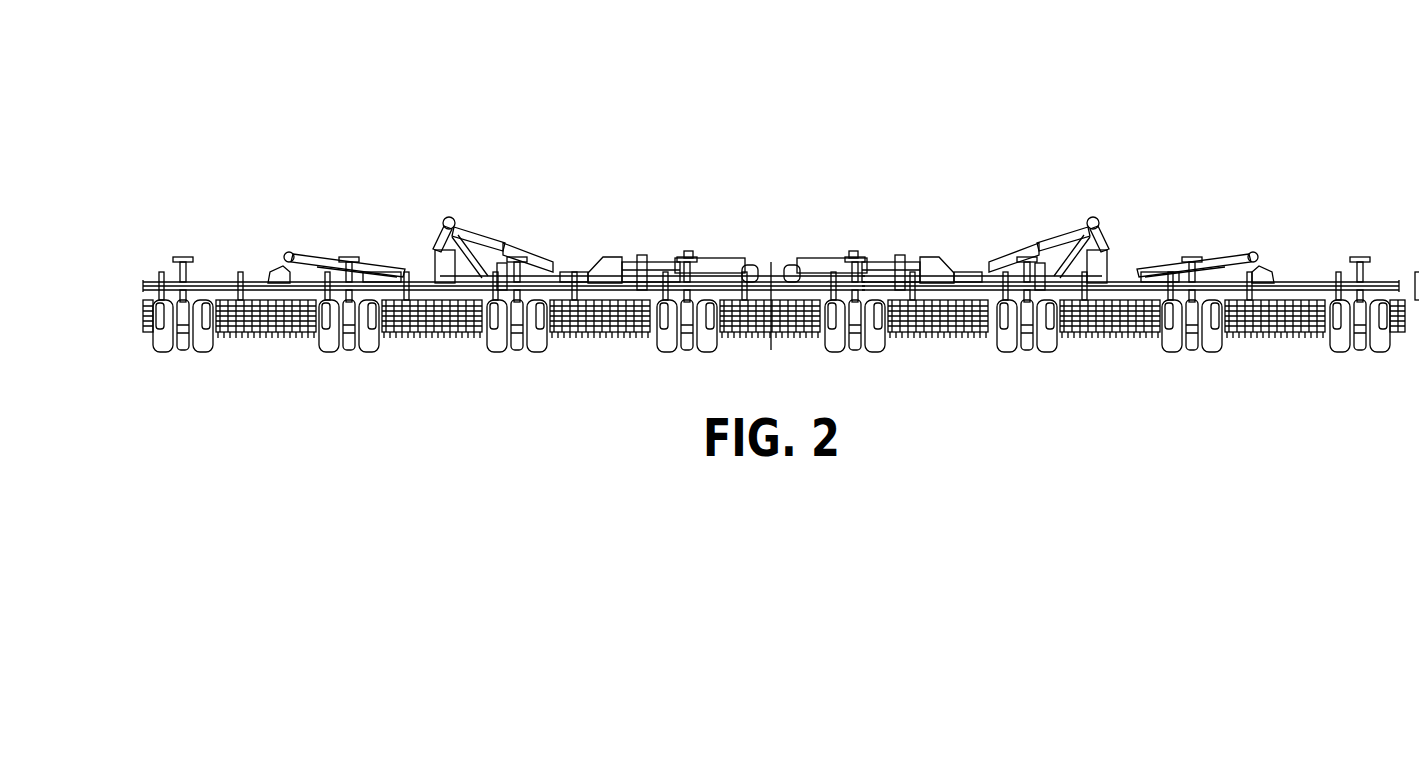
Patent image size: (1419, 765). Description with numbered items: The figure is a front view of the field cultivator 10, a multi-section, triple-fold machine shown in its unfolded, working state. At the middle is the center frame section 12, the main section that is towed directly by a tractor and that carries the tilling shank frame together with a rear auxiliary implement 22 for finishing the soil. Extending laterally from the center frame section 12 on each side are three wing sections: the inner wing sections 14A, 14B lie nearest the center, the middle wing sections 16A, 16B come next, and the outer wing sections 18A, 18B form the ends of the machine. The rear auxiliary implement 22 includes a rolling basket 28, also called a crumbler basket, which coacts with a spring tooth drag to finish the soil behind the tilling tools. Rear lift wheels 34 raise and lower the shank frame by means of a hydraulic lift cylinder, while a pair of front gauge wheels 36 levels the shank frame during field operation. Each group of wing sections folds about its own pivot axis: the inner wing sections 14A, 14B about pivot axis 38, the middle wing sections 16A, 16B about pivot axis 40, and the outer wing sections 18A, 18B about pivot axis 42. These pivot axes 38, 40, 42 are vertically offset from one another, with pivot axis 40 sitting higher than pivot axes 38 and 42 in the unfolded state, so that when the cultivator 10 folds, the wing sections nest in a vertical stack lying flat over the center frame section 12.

The field cultivator 10 is at (1030, 98).
The center frame section 12 is at (851, 240).
The inner wing section 14A is at (1028, 215).
The inner wing section 14B is at (540, 215).
The middle wing section 16A is at (1180, 237).
The middle wing section 16B is at (375, 215).
The outer wing section 18A is at (1328, 250).
The outer wing section 18B is at (223, 215).
The rear auxiliary implement 22 is at (240, 336).
The rolling basket 28 is at (565, 346).
The rear lift wheels 34 is at (335, 344).
The front gauge wheels 36 is at (1190, 346).
The pivot axis 38 is at (641, 255).
The pivot axis 40 is at (456, 228).
The pivot axis 42 is at (283, 266).